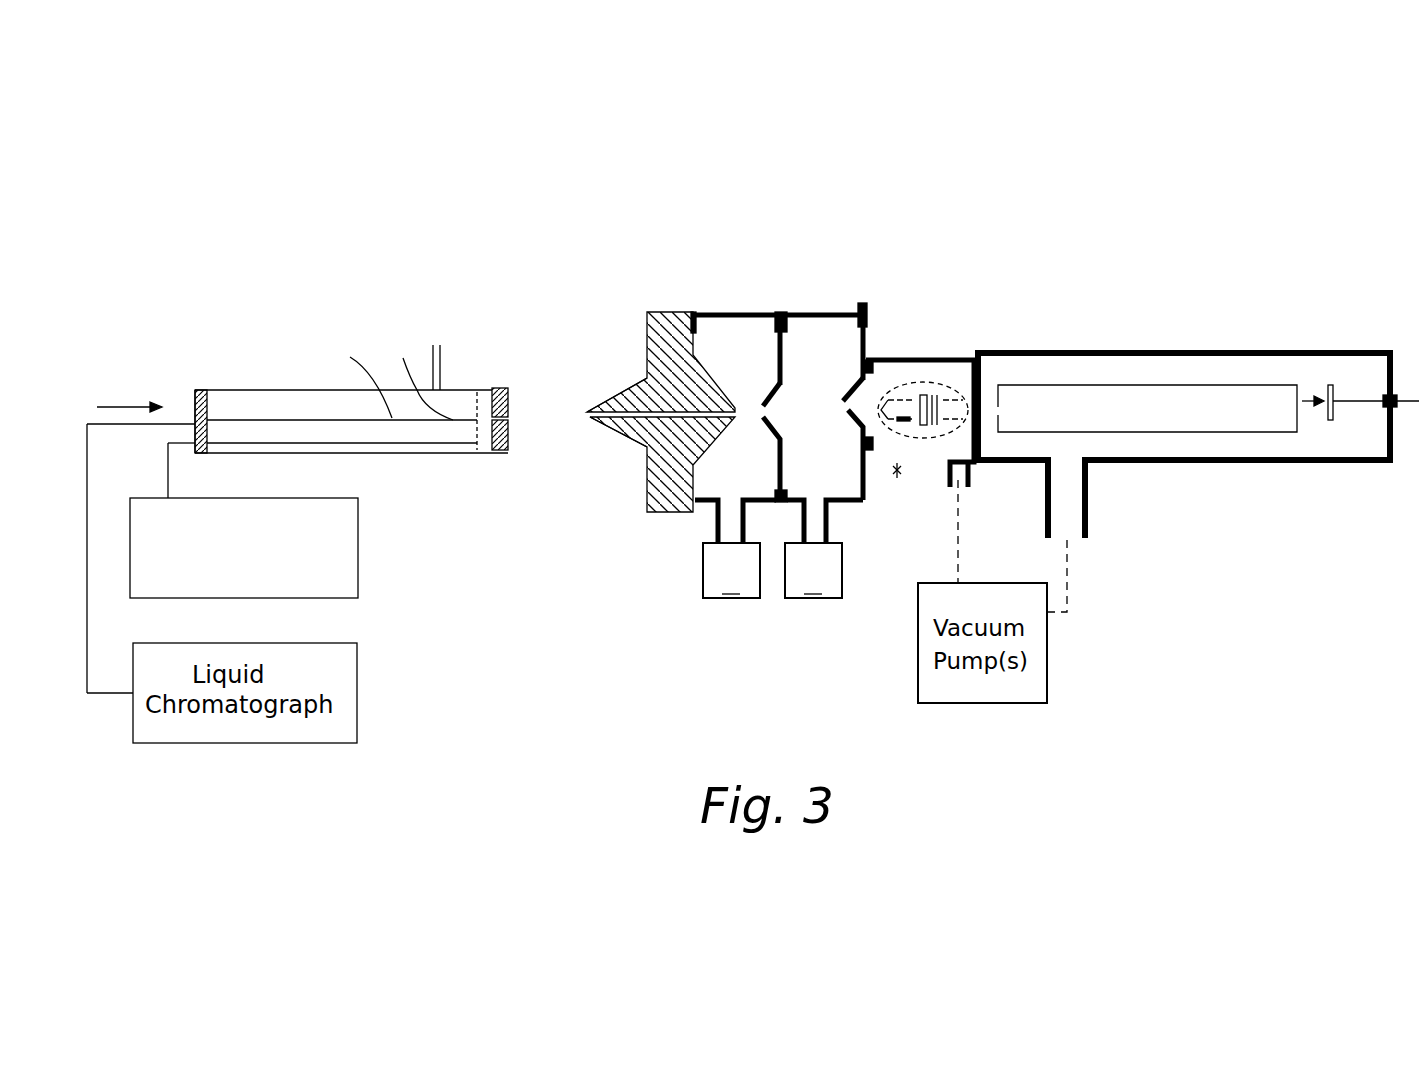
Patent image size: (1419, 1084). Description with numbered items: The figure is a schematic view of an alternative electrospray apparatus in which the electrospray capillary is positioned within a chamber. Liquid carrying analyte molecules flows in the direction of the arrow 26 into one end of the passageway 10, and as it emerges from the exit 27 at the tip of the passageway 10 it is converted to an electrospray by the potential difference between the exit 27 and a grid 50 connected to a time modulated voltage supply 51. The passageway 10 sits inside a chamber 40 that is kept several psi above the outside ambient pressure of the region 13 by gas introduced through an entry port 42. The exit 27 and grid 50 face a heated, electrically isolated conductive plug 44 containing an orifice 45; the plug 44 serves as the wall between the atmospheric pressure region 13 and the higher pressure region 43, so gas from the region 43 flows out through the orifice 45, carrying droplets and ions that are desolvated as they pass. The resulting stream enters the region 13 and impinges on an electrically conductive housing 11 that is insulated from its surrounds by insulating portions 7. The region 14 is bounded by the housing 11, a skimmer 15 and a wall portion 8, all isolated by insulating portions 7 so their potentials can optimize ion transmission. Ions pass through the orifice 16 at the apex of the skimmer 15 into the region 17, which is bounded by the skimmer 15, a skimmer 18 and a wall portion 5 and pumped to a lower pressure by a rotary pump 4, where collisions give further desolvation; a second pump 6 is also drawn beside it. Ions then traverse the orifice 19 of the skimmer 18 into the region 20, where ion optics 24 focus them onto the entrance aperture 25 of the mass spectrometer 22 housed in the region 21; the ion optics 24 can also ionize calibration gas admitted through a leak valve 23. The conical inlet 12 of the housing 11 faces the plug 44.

The rotary pump 4 is at (813, 570).
The wall portion 5 is at (845, 500).
The vacuum pump 6 is at (731, 570).
The insulating portions 7 is at (688, 307).
The wall portion 8 is at (703, 500).
The passageway 10 is at (357, 373).
The electrically conductive housing 11 is at (653, 373).
The conical inlet 12 is at (588, 406).
The region of atmospheric pressure 13 is at (542, 423).
The region 14 is at (717, 343).
The skimmer 15 is at (765, 380).
The orifice 16 is at (758, 407).
The region 17 is at (812, 333).
The skimmer 18 is at (855, 389).
The orifice 19 is at (840, 398).
The region 20 is at (878, 364).
The region 21 is at (1018, 373).
The mass spectrometer 22 is at (1157, 382).
The leak valve 23 is at (898, 478).
The ion optics 24 is at (913, 380).
The entrance aperture 25 is at (998, 405).
The arrow 26 is at (124, 403).
The exit 27 is at (416, 375).
The chamber 40 is at (310, 390).
The entry port 42 is at (435, 345).
The region of higher pressure 43 is at (463, 397).
The conductive plug 44 is at (498, 453).
The orifice 45 is at (486, 403).
The grid 50 is at (473, 443).
The time modulated voltage supply 51 is at (358, 575).